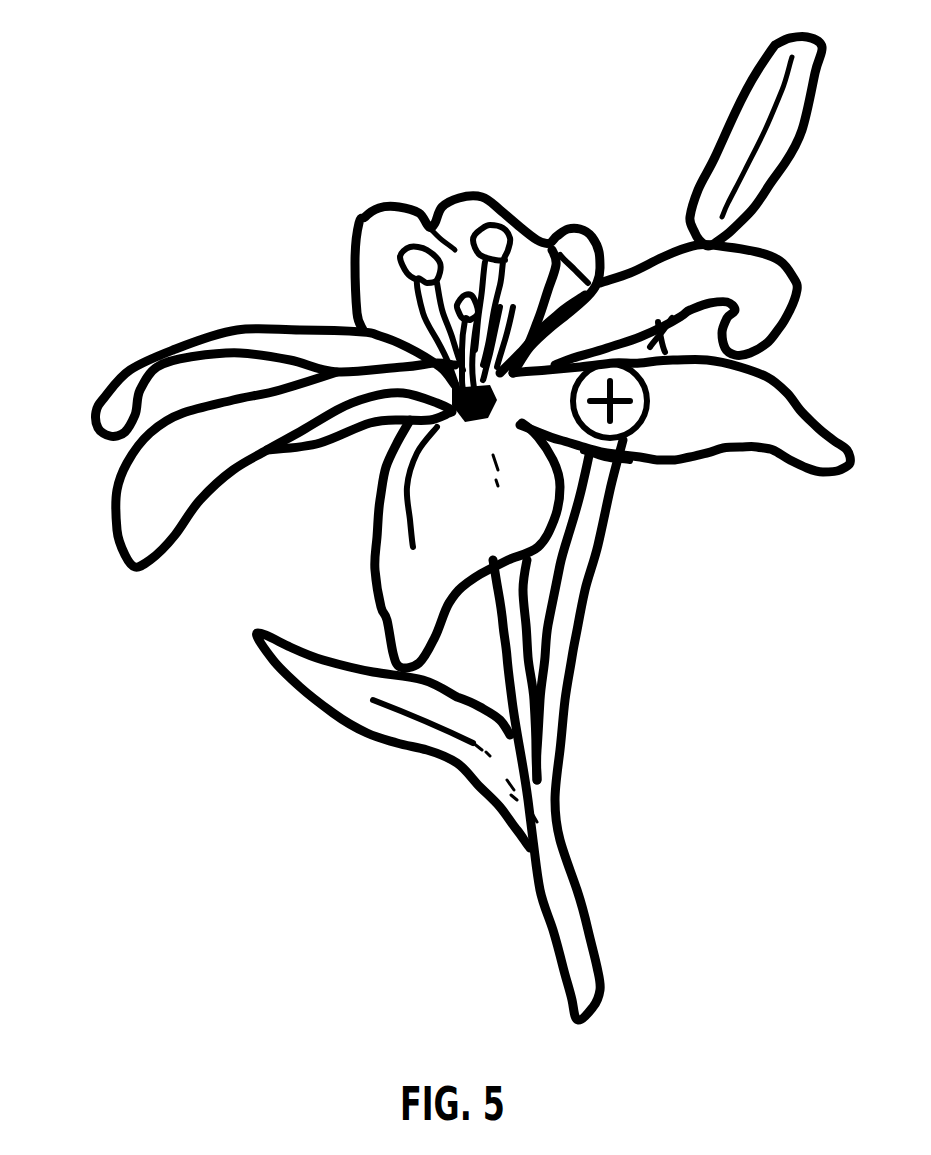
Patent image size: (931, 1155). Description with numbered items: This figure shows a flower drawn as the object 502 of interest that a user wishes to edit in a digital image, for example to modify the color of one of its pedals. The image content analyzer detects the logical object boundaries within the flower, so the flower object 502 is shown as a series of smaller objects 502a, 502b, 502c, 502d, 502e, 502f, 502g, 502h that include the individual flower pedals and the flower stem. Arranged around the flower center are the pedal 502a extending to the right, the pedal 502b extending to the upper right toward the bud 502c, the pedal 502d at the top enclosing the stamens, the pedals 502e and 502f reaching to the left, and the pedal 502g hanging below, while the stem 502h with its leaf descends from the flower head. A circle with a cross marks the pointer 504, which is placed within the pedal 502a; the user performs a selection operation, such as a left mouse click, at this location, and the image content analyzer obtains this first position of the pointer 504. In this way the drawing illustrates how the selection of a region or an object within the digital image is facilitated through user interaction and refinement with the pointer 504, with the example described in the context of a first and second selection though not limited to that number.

The object of interest 502 is at (556, 62).
The flower pedal 502a is at (798, 396).
The flower pedal 502b is at (794, 268).
The flower bud 502c is at (815, 87).
The flower pedal 502d is at (499, 196).
The flower pedal 502e is at (244, 326).
The flower pedal 502f is at (113, 492).
The flower pedal 502g is at (374, 590).
The flower stem 502h is at (588, 626).
The pointer 504 is at (627, 428).